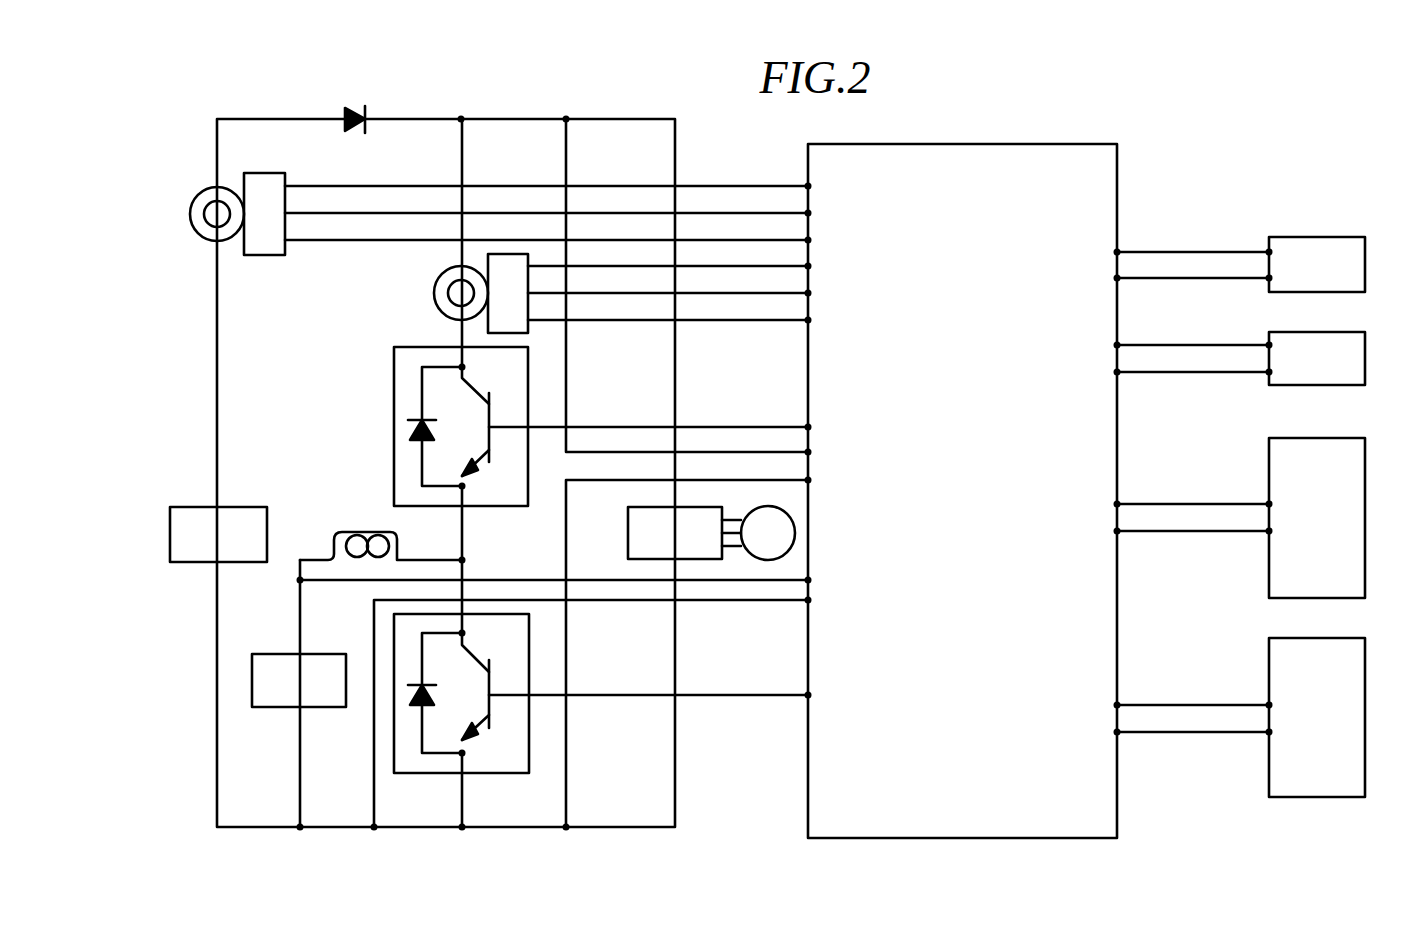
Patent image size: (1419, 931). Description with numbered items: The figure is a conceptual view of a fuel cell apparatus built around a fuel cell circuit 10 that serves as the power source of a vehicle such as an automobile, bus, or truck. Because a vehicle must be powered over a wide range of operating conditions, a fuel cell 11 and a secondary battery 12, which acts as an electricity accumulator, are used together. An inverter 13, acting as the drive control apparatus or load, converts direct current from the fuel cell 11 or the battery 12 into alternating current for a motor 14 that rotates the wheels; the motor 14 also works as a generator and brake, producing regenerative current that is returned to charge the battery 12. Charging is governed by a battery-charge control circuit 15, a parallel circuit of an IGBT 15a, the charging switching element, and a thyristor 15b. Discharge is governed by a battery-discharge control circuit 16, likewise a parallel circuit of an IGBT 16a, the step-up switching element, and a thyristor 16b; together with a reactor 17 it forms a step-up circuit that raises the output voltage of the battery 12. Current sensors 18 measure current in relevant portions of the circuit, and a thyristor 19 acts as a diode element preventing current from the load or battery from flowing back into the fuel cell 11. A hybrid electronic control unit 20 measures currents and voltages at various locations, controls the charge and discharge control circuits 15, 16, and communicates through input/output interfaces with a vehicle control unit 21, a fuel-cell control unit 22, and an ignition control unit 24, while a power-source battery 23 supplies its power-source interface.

The fuel cell circuit 10 is at (230, 832).
The fuel cell 11 is at (185, 507).
The secondary battery 12 is at (252, 682).
The inverter 13 is at (628, 530).
The motor 14 is at (752, 512).
The battery-charge control circuit 15 is at (564, 418).
The IGBT 15a is at (491, 411).
The thyristor 15b is at (412, 430).
The battery-discharge control circuit 16 is at (565, 712).
The IGBT 16a is at (491, 684).
The thyristor 16b is at (412, 698).
The reactor 17 is at (341, 531).
The current sensor 18 is at (190, 213).
The thyristor 19 is at (343, 117).
The hybrid electronic control unit 20 is at (808, 790).
The vehicle control unit 21 is at (1366, 690).
The fuel-cell control unit 22 is at (1366, 490).
The power-source battery 23 is at (1366, 372).
The ignition control unit 24 is at (1366, 270).